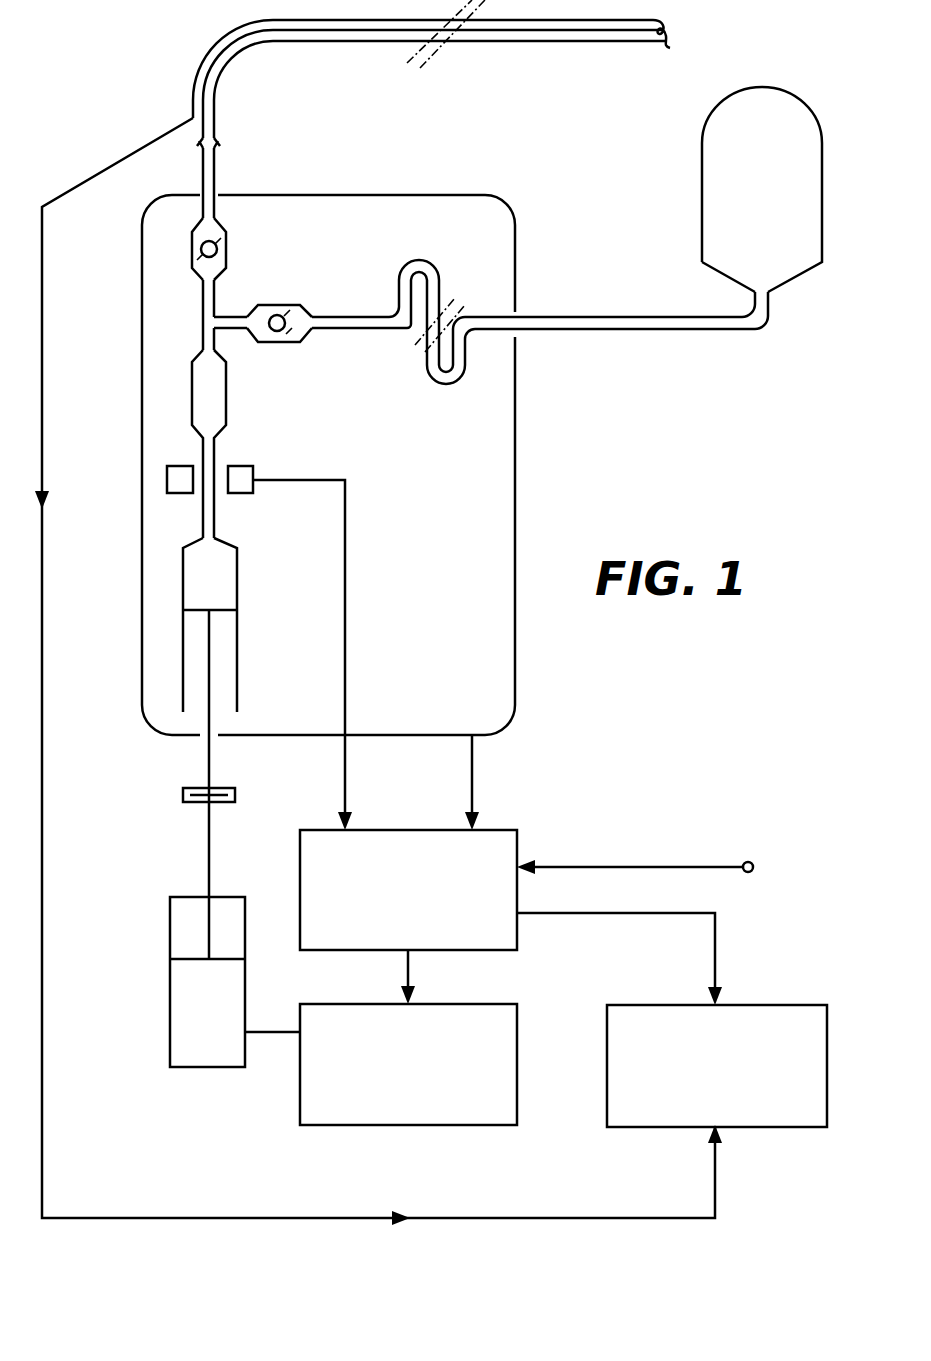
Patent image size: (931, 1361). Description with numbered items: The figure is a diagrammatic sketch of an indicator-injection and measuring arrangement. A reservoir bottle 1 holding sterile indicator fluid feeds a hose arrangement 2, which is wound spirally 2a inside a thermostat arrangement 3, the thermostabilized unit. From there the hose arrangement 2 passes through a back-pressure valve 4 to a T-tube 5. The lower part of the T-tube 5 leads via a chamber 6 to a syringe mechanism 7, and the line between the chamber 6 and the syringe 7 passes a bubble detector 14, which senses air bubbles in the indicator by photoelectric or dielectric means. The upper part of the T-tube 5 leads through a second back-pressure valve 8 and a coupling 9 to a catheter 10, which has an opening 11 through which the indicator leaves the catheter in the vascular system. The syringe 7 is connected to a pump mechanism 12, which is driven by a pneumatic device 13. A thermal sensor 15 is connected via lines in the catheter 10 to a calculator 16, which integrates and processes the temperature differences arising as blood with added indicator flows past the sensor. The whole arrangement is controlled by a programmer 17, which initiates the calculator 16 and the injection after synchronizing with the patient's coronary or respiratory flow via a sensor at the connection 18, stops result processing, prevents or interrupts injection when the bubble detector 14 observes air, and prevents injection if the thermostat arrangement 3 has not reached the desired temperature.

The reservoir bottle 1 is at (702, 195).
The hose arrangement 2 is at (672, 317).
The spiral winding 2a is at (439, 292).
The thermostat arrangement 3 is at (572, 509).
The back-pressure valve 4 is at (286, 305).
The T-tube 5 is at (203, 325).
The chamber 6 is at (192, 392).
The syringe mechanism 7 is at (278, 624).
The second back-pressure valve 8 is at (192, 250).
The coupling 9 is at (223, 178).
The catheter 10 is at (385, 40).
The opening 11 is at (545, 40).
The pump mechanism 12 is at (170, 1020).
The pneumatic device 13 is at (393, 1082).
The bubble detector 14 is at (245, 466).
The thermal sensor 15 is at (682, 47).
The calculator 16 is at (701, 1082).
The programmer 17 is at (394, 909).
The connection 18 is at (659, 870).